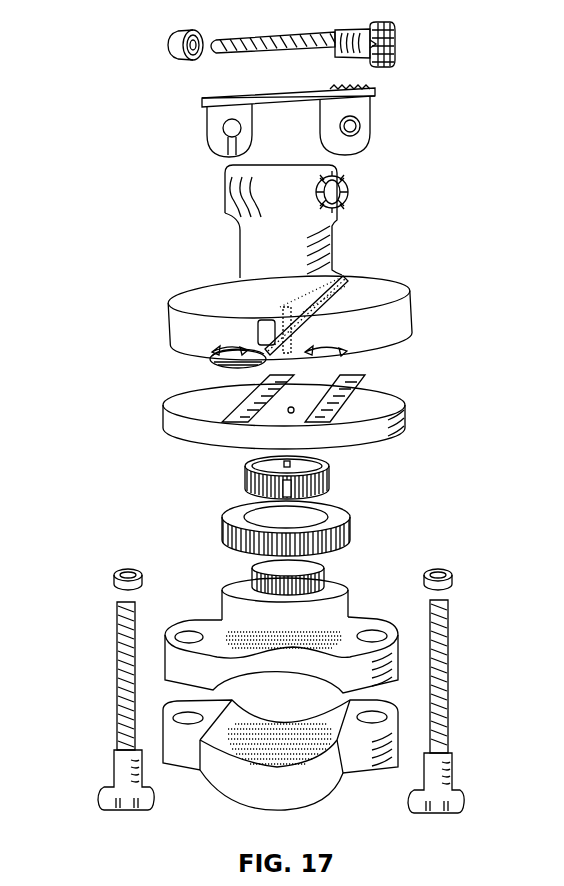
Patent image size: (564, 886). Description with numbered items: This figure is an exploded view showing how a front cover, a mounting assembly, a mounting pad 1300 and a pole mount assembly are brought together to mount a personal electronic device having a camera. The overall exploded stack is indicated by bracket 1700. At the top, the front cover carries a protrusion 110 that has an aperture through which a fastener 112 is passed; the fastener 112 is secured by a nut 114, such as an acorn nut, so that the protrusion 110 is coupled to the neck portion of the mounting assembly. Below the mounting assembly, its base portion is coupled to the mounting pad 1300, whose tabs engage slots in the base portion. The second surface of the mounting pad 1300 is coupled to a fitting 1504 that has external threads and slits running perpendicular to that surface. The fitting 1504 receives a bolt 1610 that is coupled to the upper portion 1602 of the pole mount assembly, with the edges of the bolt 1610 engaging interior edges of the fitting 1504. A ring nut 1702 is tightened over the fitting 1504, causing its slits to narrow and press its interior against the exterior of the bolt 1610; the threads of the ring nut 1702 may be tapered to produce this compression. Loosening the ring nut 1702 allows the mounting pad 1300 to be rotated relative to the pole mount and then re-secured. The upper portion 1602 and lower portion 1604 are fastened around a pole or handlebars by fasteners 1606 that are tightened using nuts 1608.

The protrusion 110 is at (200, 124).
The fastener 112 is at (398, 46).
The nut 114 is at (163, 42).
The mounting pad 1300 is at (410, 412).
The fitting 1504 is at (333, 476).
The upper portion 1602 is at (212, 624).
The lower portion 1604 is at (208, 768).
The fastener 1606 is at (454, 714).
The nut 1608 is at (462, 578).
The bolt 1610 is at (330, 573).
The mount assembly 1700 is at (107, 750).
The ring nut 1702 is at (216, 532).